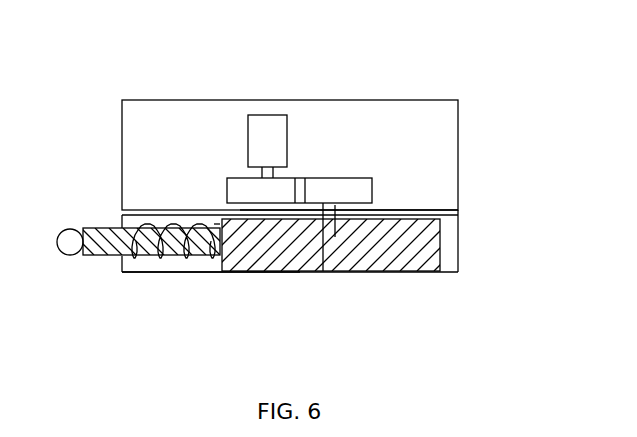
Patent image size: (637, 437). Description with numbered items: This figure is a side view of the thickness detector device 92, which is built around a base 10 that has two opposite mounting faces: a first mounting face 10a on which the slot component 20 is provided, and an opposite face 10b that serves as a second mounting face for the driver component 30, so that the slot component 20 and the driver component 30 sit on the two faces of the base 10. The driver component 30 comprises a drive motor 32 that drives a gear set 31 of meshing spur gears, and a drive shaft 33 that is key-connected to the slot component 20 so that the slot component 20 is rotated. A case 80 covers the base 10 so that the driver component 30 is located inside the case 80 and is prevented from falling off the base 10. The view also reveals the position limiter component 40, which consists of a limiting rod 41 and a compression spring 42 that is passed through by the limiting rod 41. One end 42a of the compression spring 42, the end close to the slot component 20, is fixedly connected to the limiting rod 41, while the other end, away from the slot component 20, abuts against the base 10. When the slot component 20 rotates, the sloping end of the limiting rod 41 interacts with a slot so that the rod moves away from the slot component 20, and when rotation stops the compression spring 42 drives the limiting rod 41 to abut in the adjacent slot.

The thickness detector device 92 is at (123, 35).
The case 80 is at (189, 132).
The base 10 is at (451, 224).
The first mounting face 10a is at (265, 273).
The face opposite to the first mounting face 10b is at (397, 210).
The slot component 20 is at (386, 259).
The driver component 30 is at (305, 119).
The gear set 31 is at (348, 194).
The drive motor 32 is at (277, 122).
The drive shaft 33 is at (332, 203).
The position limiter component 40 is at (136, 267).
The limiting rod 41 is at (101, 257).
The compression spring 42 is at (200, 261).
The end of the compression spring 42a is at (220, 223).